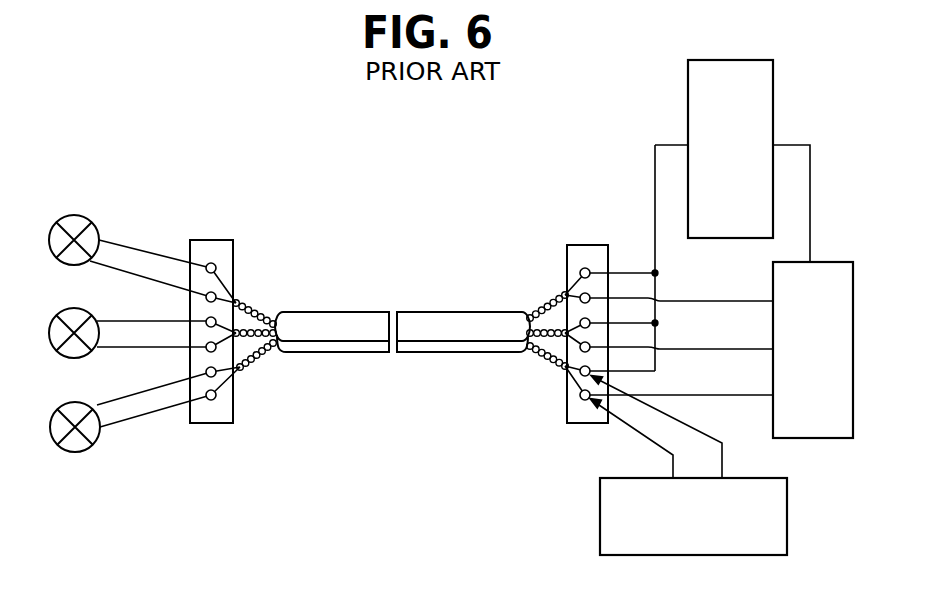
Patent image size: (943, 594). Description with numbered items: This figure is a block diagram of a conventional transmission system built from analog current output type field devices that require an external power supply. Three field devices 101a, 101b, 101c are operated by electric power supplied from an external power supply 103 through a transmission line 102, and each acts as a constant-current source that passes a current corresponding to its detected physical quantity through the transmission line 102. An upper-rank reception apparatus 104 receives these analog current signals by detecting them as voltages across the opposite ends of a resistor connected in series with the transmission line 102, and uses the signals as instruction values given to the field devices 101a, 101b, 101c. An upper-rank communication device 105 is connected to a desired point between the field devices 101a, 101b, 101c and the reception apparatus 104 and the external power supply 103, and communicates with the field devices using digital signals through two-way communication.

The field device 101a is at (58, 217).
The field device 101b is at (54, 314).
The field device 101c is at (55, 408).
The transmission line 102 is at (328, 310).
The external power supply 103 is at (688, 98).
The reception apparatus 104 is at (820, 440).
The communication device 105 is at (600, 513).